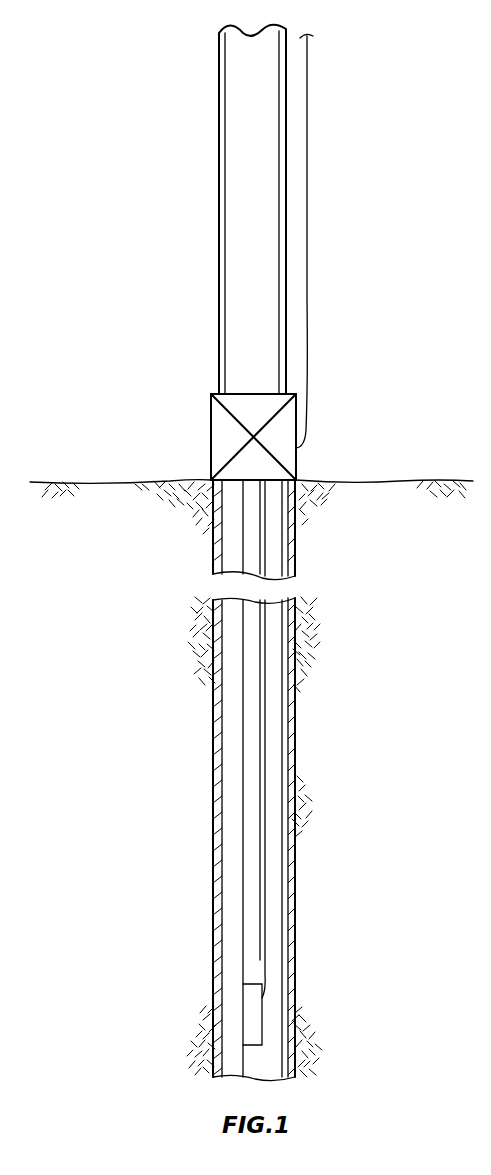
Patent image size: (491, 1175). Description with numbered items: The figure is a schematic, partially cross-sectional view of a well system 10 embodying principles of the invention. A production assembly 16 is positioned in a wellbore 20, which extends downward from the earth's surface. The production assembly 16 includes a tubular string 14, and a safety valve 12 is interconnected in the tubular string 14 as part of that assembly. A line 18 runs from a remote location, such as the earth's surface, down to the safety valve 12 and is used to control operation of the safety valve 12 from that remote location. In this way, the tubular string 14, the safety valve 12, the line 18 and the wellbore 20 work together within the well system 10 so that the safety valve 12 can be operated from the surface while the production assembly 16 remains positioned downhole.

The well system 10 is at (121, 120).
The safety valve 12 is at (263, 1024).
The tubular string 14 is at (243, 709).
The production assembly 16 is at (323, 699).
The line 18 is at (270, 866).
The wellbore 20 is at (232, 870).